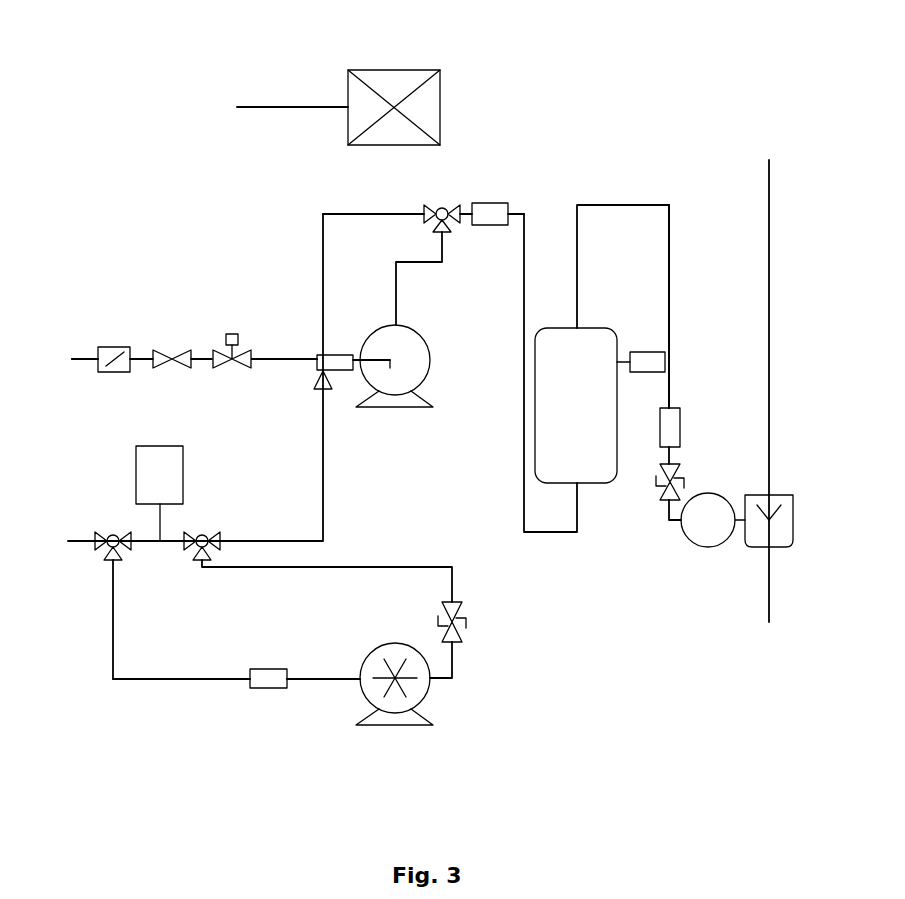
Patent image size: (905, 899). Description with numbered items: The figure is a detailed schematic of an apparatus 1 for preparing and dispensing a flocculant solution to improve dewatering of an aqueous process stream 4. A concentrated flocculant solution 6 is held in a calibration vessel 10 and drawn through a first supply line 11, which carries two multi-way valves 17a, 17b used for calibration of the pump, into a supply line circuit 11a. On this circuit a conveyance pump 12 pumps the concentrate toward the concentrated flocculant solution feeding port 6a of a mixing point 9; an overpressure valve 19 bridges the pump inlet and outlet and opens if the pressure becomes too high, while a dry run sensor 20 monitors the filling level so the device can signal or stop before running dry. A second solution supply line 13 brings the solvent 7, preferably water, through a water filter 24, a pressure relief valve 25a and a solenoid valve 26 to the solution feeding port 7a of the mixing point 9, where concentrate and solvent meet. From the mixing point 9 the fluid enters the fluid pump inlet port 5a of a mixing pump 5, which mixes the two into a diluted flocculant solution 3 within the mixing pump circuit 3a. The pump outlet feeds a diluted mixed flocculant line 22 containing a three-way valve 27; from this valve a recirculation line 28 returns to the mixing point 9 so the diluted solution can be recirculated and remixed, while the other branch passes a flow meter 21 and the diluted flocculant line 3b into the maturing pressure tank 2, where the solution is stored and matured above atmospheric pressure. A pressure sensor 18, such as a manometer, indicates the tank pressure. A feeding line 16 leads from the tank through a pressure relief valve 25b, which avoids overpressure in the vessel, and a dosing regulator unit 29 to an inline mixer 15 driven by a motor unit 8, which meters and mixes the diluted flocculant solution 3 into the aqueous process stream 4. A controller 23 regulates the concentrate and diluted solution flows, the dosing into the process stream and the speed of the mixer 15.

The apparatus 1 is at (148, 100).
The maturing pressure tank 2 is at (580, 328).
The diluted flocculant solution 3 is at (563, 335).
The mixing pump circuit 3a is at (322, 222).
The diluted flocculant line 3b is at (522, 443).
The aqueous process stream 4 is at (769, 222).
The mixing pump 5 is at (428, 385).
The fluid pump inlet port 5a is at (392, 368).
The concentrated flocculant solution 6 is at (175, 488).
The concentrated flocculant solution feeding port 6a is at (326, 388).
The solvent 7 is at (80, 355).
The solution feeding port 7a is at (316, 363).
The motor unit 8 is at (697, 543).
The mixing point 9 is at (315, 358).
The calibration vessel 10 is at (185, 462).
The first supply line 11 is at (120, 707).
The supply line circuit 11a is at (322, 690).
The conveyance pump 12 is at (425, 700).
The second solution supply line 13 is at (113, 252).
The inline mixer 15 is at (752, 547).
The feeding line 16 is at (672, 388).
The multi-way valve 17a is at (108, 562).
The multi-way valve 17b is at (198, 565).
The pressure sensor 18 is at (647, 352).
The overpressure valve 19 is at (463, 620).
The dry run sensor 20 is at (267, 688).
The flow meter 21 is at (488, 203).
The diluted mixed flocculant line 22 is at (435, 263).
The controller 23 is at (435, 95).
The water filter 24 is at (113, 373).
The pressure relief valve 25a is at (168, 348).
The pressure relief valve 25b is at (665, 482).
The solenoid valve 26 is at (227, 333).
The three-way valve 27 is at (443, 205).
The recirculation line 28 is at (375, 212).
The dosing regulator unit 29 is at (682, 428).